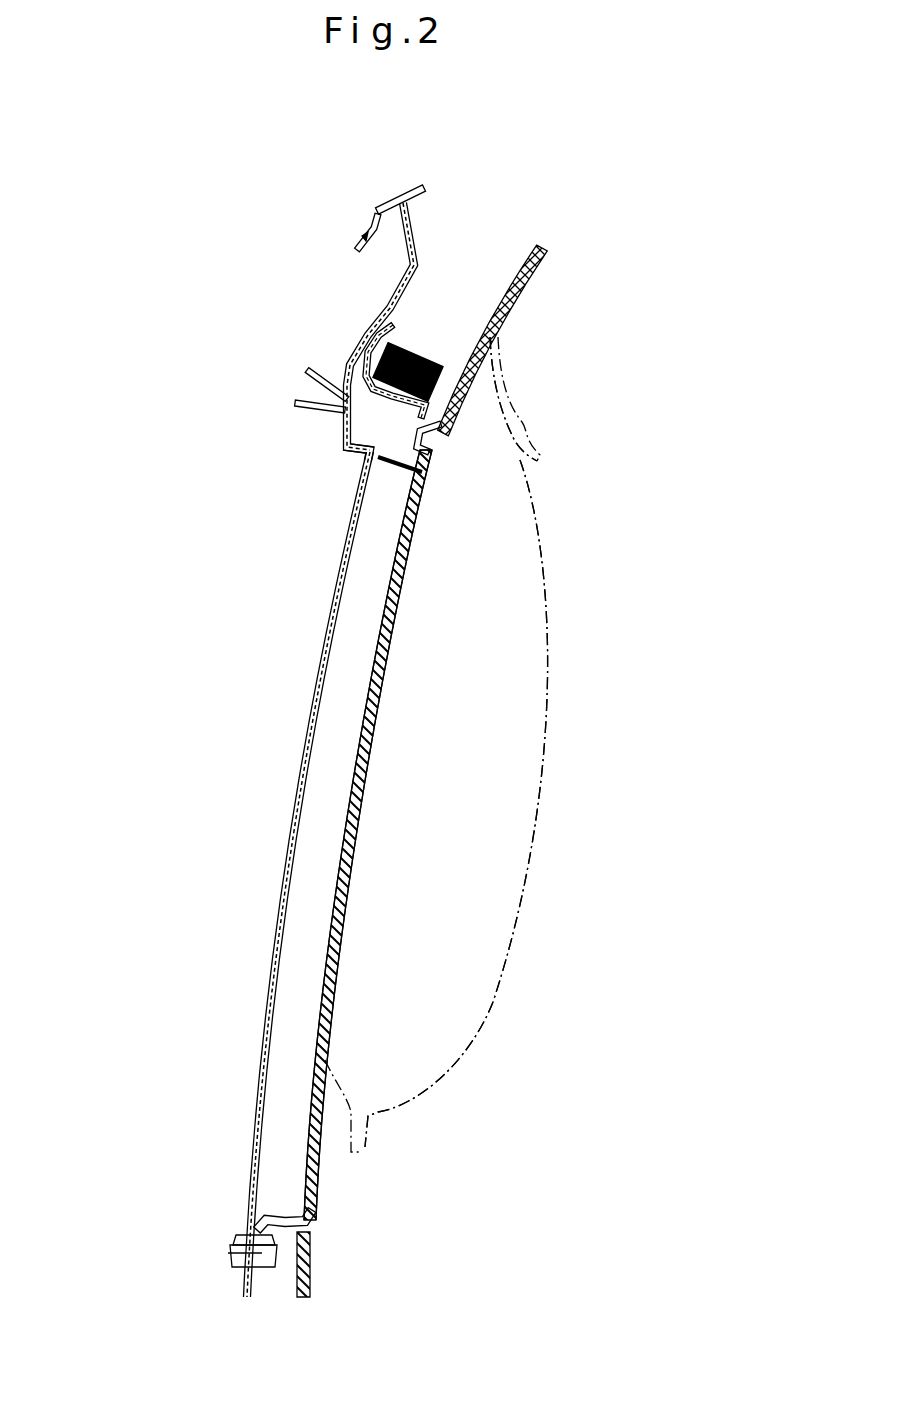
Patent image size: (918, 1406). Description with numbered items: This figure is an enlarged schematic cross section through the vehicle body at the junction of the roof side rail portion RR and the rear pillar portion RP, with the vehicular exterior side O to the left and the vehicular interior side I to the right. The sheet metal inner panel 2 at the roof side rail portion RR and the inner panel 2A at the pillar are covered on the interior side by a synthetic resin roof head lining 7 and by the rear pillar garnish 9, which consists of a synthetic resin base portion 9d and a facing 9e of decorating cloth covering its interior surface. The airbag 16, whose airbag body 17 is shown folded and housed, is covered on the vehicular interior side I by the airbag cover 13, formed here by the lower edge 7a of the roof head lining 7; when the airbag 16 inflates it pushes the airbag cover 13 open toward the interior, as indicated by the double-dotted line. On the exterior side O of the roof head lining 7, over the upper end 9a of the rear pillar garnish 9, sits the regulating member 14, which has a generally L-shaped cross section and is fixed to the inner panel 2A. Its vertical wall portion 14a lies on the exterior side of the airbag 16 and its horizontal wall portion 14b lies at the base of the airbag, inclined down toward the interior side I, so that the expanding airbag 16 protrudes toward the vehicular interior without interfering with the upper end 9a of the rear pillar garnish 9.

The inner panel 2 is at (400, 297).
The inner panel 2A is at (294, 796).
The roof head lining 7 is at (537, 266).
The lower edge of roof head lining 7a is at (527, 433).
The rear pillar garnish 9 is at (447, 762).
The upper end of rear pillar garnish 9a is at (436, 458).
The base portion 9d is at (362, 790).
The facing 9e is at (358, 827).
The airbag cover 13 is at (580, 423).
The regulating member 14 is at (386, 409).
The vertical wall portion 14a is at (367, 352).
The horizontal wall portion 14b is at (367, 452).
The airbag 16 is at (456, 675).
The airbag body 17 is at (420, 355).
The roof side rail portion RR is at (344, 264).
The rear pillar portion RP is at (233, 946).
The vehicular exterior side O is at (72, 706).
The vehicular interior side I is at (725, 722).